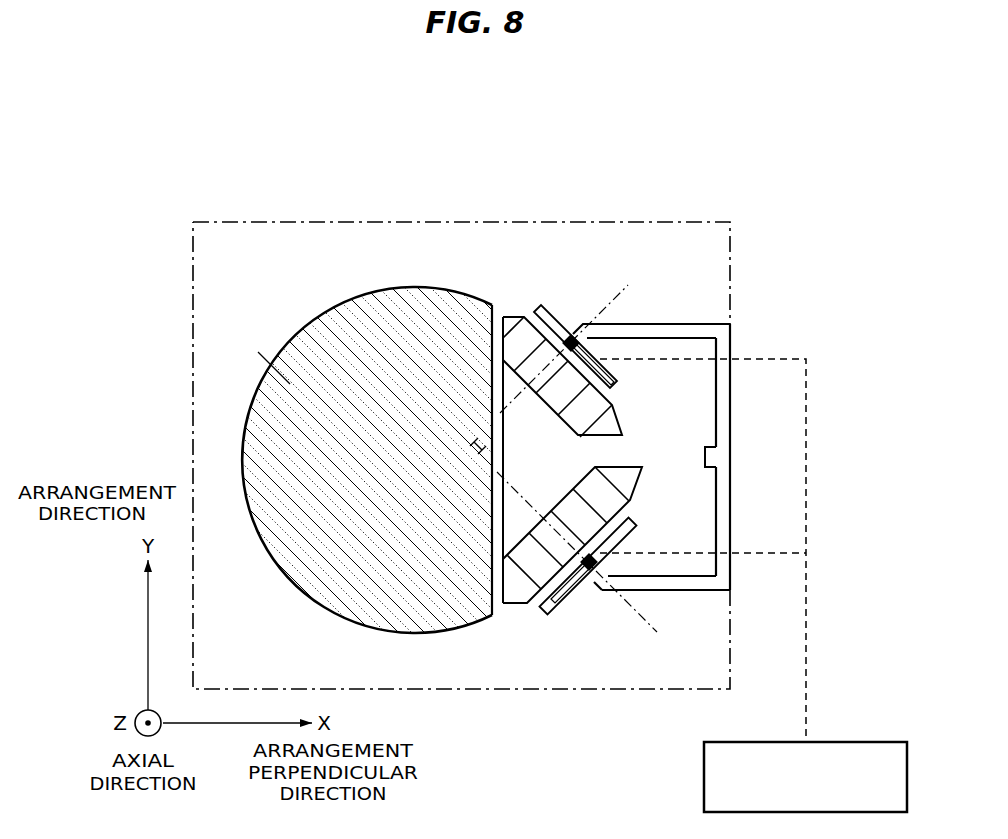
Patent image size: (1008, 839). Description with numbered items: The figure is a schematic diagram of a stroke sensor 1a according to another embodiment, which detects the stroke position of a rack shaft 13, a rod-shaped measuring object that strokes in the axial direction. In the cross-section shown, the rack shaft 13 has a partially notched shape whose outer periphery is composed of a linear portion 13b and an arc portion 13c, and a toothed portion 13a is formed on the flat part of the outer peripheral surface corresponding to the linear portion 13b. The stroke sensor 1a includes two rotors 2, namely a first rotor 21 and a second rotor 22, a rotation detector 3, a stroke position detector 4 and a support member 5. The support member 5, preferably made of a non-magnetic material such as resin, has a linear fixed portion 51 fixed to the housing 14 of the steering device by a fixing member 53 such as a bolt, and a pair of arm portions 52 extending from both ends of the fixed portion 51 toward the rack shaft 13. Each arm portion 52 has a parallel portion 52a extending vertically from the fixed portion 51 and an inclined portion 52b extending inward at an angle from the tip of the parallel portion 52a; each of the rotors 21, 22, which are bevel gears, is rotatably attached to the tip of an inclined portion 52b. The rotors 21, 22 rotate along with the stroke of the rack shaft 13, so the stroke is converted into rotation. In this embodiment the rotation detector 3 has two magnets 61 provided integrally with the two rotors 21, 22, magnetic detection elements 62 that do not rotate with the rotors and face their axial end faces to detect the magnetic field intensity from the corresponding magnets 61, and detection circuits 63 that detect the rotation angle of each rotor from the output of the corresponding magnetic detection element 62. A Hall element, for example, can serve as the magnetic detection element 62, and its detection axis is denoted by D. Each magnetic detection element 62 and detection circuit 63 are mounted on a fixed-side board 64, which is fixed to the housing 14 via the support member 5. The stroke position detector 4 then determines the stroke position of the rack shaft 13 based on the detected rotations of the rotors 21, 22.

The stroke sensor 1a is at (128, 200).
The rotor 2 is at (645, 478).
The rotation detector 3 is at (598, 300).
The stroke position detector 4 is at (883, 740).
The support member 5 is at (673, 467).
The rack shaft 13 is at (307, 308).
The toothed portion 13a is at (492, 532).
The linear portion 13b is at (492, 448).
The arc portion 13c is at (257, 358).
The housing 14 is at (192, 220).
The first rotor 21 is at (518, 603).
The second rotor 22 is at (508, 318).
The fixed portion 51 is at (725, 428).
The arm portion 52 is at (686, 331).
The parallel portion 52a is at (677, 584).
The inclined portion 52b is at (599, 586).
The fixing member 53 is at (705, 456).
The magnet 61 is at (524, 316).
The magnetic detection element 62 is at (578, 345).
The detection circuit 63 is at (593, 303).
The fixed-side board 64 is at (566, 318).
The detection axis D is at (617, 392).